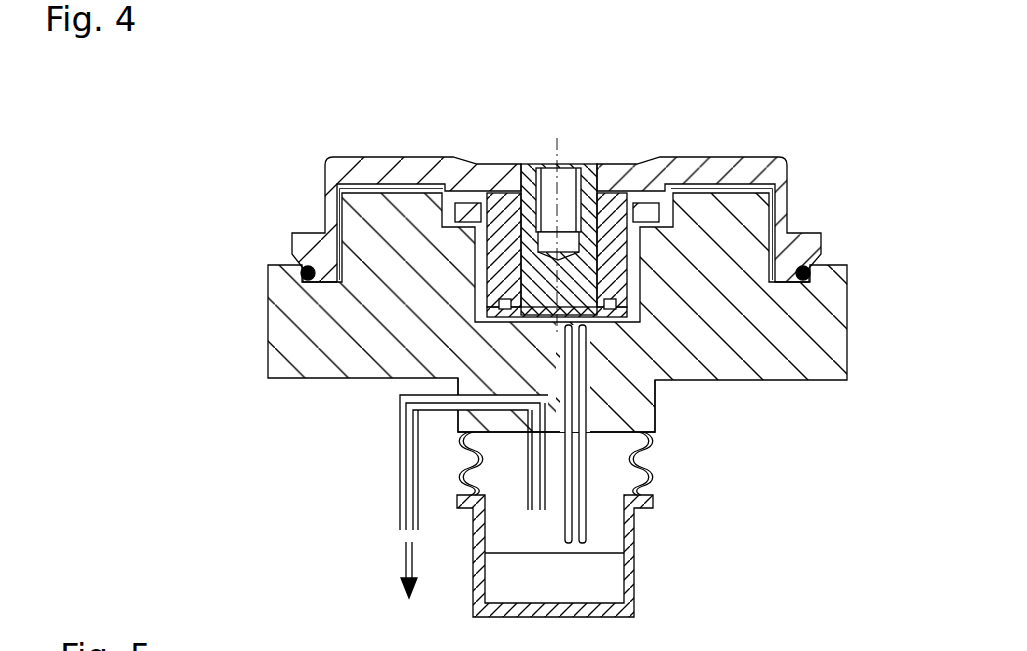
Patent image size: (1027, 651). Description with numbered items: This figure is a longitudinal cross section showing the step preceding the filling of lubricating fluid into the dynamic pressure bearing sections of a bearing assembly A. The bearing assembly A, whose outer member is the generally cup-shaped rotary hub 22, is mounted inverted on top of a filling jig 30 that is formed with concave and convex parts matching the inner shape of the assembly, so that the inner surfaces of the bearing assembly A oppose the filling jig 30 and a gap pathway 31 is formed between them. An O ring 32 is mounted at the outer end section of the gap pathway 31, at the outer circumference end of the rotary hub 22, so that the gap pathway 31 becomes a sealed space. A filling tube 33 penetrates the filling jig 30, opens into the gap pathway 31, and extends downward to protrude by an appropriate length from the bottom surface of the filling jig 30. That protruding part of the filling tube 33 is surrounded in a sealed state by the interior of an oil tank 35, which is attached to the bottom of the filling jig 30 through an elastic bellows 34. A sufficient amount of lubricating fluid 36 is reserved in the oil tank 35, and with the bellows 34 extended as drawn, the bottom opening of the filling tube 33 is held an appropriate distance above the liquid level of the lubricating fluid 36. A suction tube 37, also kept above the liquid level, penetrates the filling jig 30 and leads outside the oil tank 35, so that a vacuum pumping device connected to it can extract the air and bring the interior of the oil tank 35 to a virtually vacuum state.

The bearing assembly A is at (322, 180).
The rotary hub 22 is at (484, 162).
The filling jig 30 is at (316, 368).
The gap pathway 31 is at (708, 188).
The O ring 32 is at (812, 283).
The filling tube 33 is at (632, 370).
The elastic bellows 34 is at (634, 480).
The oil tank 35 is at (634, 586).
The lubricating fluid 36 is at (540, 607).
The suction tube 37 is at (527, 497).